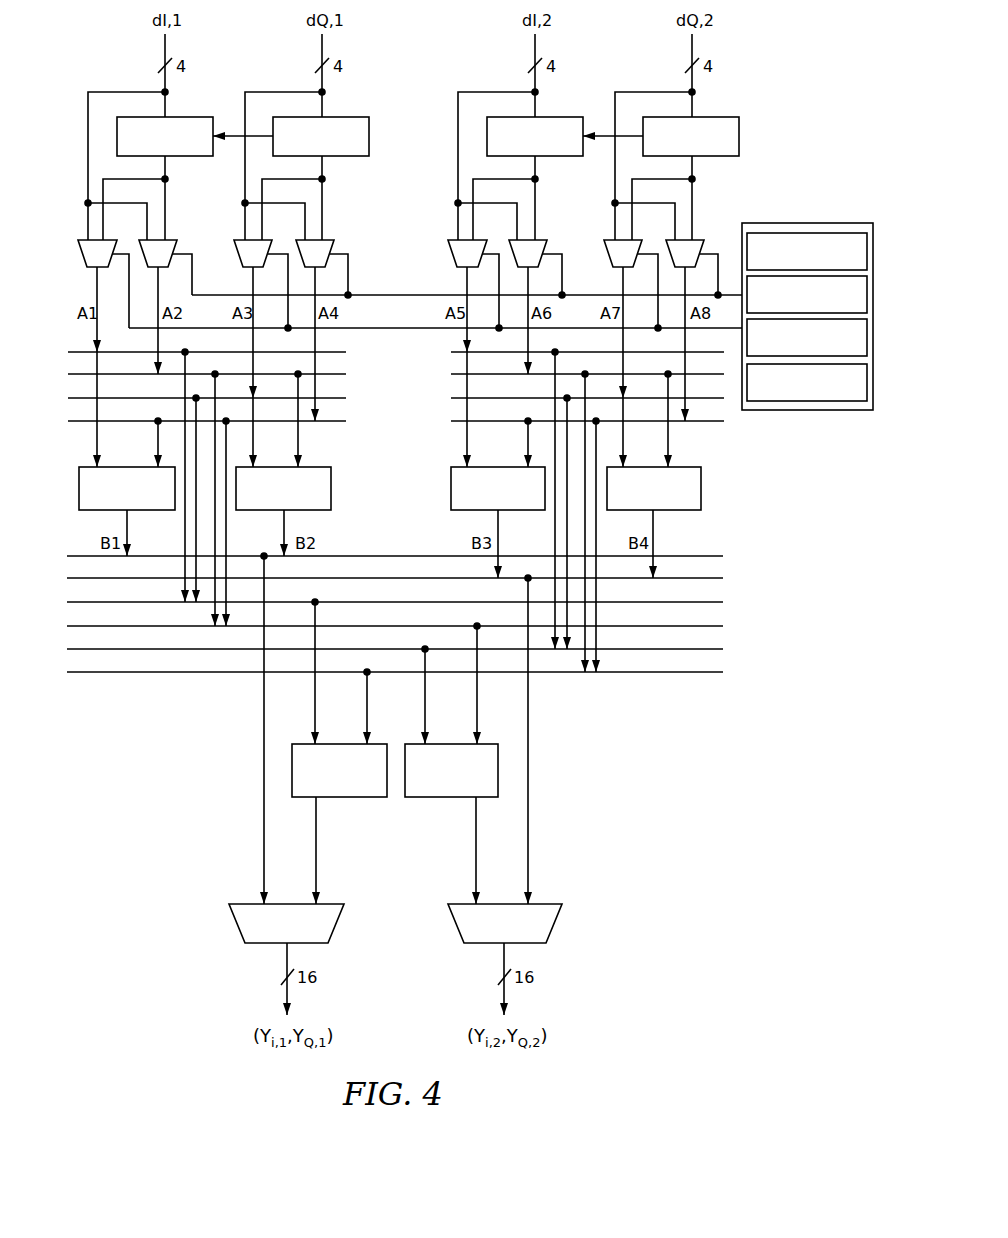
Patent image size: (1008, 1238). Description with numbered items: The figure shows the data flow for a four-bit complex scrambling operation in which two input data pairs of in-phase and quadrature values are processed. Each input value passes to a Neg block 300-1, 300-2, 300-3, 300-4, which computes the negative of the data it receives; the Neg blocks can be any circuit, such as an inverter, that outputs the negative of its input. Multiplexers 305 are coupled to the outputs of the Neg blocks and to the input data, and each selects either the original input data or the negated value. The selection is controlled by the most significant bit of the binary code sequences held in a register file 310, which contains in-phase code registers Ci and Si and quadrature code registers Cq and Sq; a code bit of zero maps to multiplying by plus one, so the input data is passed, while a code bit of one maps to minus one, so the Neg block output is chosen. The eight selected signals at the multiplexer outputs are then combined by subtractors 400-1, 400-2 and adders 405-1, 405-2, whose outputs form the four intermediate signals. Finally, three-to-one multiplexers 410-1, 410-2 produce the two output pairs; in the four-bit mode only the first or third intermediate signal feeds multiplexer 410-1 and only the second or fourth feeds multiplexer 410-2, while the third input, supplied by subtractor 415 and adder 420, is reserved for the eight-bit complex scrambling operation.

The Neg block 300-1 is at (203, 157).
The Neg block 300-2 is at (359, 157).
The Neg block 300-3 is at (573, 157).
The Neg block 300-4 is at (739, 141).
The multiplexers 305 is at (84, 255).
The register file 310 is at (843, 223).
The subtractor 400-1 is at (79, 470).
The subtractor 400-2 is at (451, 501).
The adder 405-1 is at (331, 471).
The adder 405-2 is at (701, 493).
The 3-to-1 multiplexer 410-1 is at (337, 922).
The 3-to-1 multiplexer 410-2 is at (555, 922).
The subtractor 415 is at (364, 798).
The adder 420 is at (428, 798).